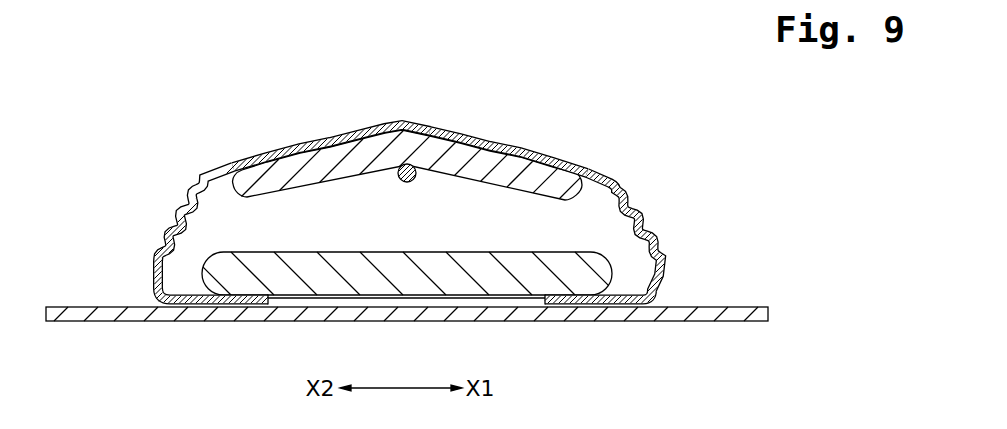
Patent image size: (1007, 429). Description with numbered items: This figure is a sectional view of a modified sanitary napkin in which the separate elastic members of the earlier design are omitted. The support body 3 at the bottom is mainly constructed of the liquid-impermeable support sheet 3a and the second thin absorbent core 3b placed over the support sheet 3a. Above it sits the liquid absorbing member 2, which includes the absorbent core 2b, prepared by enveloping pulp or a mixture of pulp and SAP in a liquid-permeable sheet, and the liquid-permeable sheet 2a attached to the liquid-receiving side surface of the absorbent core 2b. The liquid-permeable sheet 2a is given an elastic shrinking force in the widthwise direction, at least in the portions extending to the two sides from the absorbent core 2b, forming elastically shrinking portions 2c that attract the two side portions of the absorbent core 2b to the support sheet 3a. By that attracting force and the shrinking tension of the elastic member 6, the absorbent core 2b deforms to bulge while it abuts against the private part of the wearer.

The liquid absorbing member 2 is at (407, 182).
The liquid-permeable sheet 2a is at (286, 146).
The absorbent core 2b is at (478, 156).
The elastically shrinking portions 2c is at (156, 236).
The support body 3 is at (442, 295).
The liquid-impermeable support sheet 3a is at (681, 316).
The second thin absorbent core 3b is at (502, 262).
The elastic member 6 is at (412, 181).